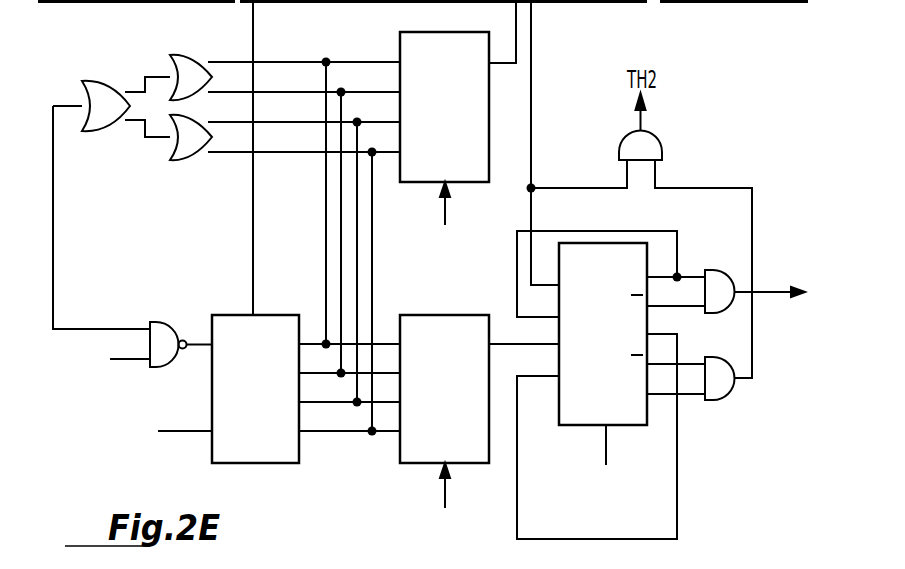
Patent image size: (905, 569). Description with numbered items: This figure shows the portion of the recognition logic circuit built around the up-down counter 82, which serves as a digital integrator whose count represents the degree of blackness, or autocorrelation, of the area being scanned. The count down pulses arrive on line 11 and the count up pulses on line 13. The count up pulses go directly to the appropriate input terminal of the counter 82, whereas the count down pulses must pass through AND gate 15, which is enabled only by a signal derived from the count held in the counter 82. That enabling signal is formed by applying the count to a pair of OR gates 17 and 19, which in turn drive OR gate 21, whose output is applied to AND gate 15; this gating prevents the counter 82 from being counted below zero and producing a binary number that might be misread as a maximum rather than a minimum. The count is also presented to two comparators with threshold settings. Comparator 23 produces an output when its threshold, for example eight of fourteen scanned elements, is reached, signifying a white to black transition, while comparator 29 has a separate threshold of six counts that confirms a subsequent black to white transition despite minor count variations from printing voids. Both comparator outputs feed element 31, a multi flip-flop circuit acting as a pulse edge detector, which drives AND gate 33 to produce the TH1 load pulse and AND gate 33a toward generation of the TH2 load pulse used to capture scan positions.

The line 11 is at (118, 359).
The line 13 is at (168, 431).
The AND gate 15 is at (158, 321).
The OR gate 17 is at (191, 60).
The OR gate 19 is at (187, 160).
The OR gate 21 is at (100, 82).
The comparator 23 is at (403, 35).
The comparator 29 is at (408, 453).
The multi flip-flop circuit 31 is at (572, 428).
The AND gate 33 is at (716, 270).
The AND gate 33a is at (714, 399).
The counter 82 is at (278, 323).